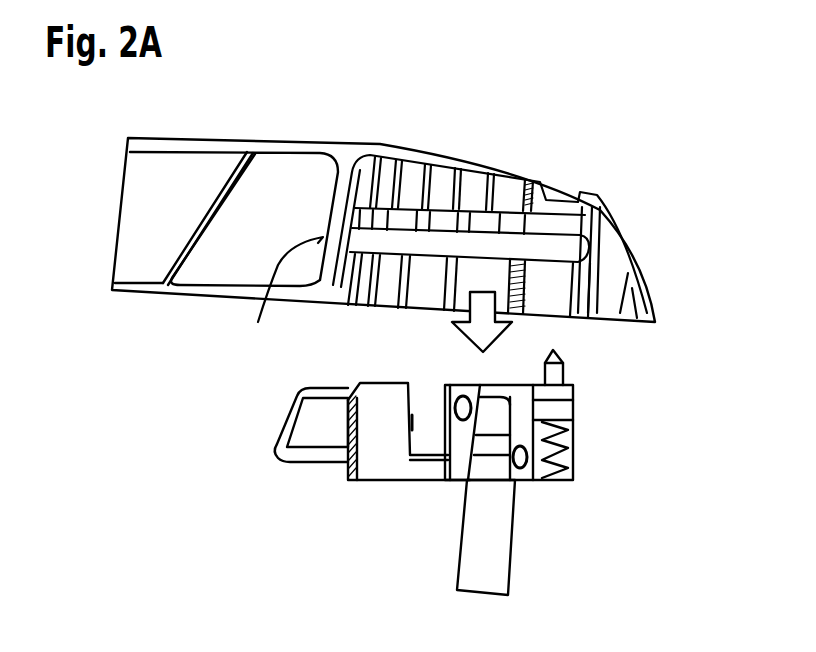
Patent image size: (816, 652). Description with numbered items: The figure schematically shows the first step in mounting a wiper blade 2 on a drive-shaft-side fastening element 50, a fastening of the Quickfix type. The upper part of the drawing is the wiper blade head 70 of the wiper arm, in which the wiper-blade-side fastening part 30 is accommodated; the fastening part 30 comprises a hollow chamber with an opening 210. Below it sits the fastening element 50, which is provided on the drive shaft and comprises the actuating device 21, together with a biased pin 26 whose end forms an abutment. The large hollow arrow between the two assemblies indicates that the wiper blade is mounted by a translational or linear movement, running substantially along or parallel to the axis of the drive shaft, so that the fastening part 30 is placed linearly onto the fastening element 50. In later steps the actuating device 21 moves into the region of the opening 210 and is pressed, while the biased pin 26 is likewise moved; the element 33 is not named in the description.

The wiper blade 2 is at (108, 132).
The wiper blade head 70 is at (456, 143).
The fastening part 30 is at (543, 257).
The opening 210 is at (258, 322).
The biased pin 26 is at (562, 373).
The fastening element 50 is at (597, 438).
The actuating device 21 is at (325, 430).
The block 33 is at (502, 540).